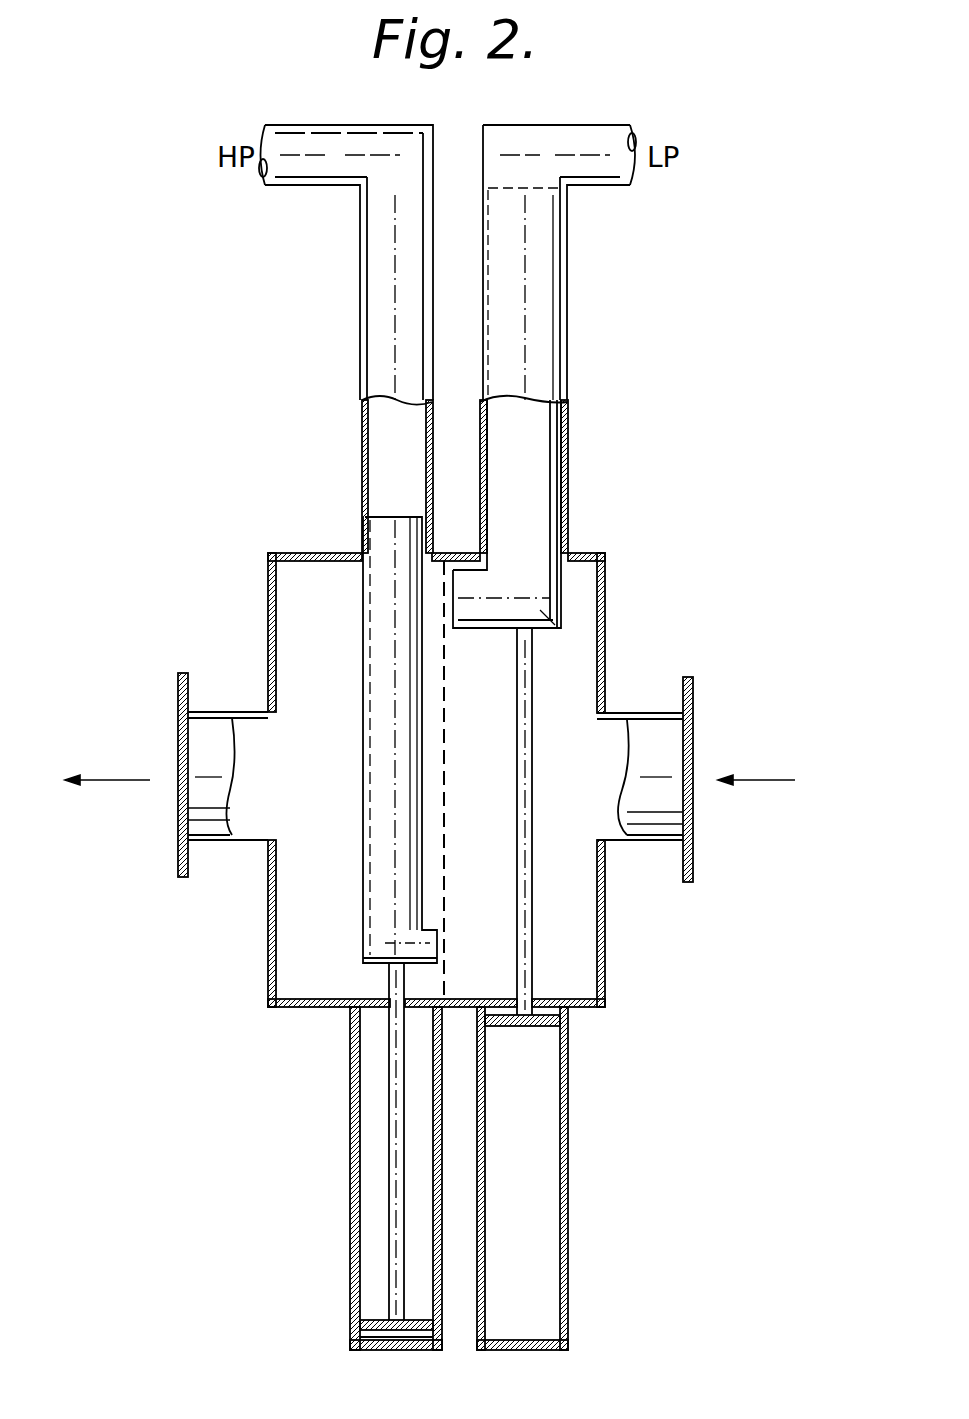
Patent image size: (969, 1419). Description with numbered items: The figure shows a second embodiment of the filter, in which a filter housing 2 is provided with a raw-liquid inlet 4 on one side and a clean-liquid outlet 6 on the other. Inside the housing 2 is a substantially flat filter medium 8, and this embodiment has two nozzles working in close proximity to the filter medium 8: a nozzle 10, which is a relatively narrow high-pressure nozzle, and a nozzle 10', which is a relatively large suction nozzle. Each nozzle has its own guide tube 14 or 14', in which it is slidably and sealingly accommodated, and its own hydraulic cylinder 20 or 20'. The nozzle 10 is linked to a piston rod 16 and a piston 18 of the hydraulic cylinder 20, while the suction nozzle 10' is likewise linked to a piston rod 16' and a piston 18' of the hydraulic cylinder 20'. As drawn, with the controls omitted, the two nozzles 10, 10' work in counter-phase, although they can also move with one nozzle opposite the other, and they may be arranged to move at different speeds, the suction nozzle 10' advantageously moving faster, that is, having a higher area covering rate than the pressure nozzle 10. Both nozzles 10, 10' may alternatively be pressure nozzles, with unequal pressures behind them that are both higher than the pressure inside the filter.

The filter housing 2 is at (313, 553).
The raw-liquid inlet 4 is at (655, 733).
The clean-liquid outlet 6 is at (218, 728).
The filter medium 8 is at (444, 782).
The nozzle 10 is at (437, 749).
The nozzle 10' is at (502, 514).
The guide tube 14 is at (346, 262).
The guide tube 14' is at (567, 262).
The piston rod 16 is at (351, 1141).
The piston rod 16' is at (554, 821).
The piston 18 is at (364, 1310).
The piston 18' is at (565, 1050).
The hydraulic cylinder 20 is at (367, 1178).
The hydraulic cylinder 20' is at (557, 1178).